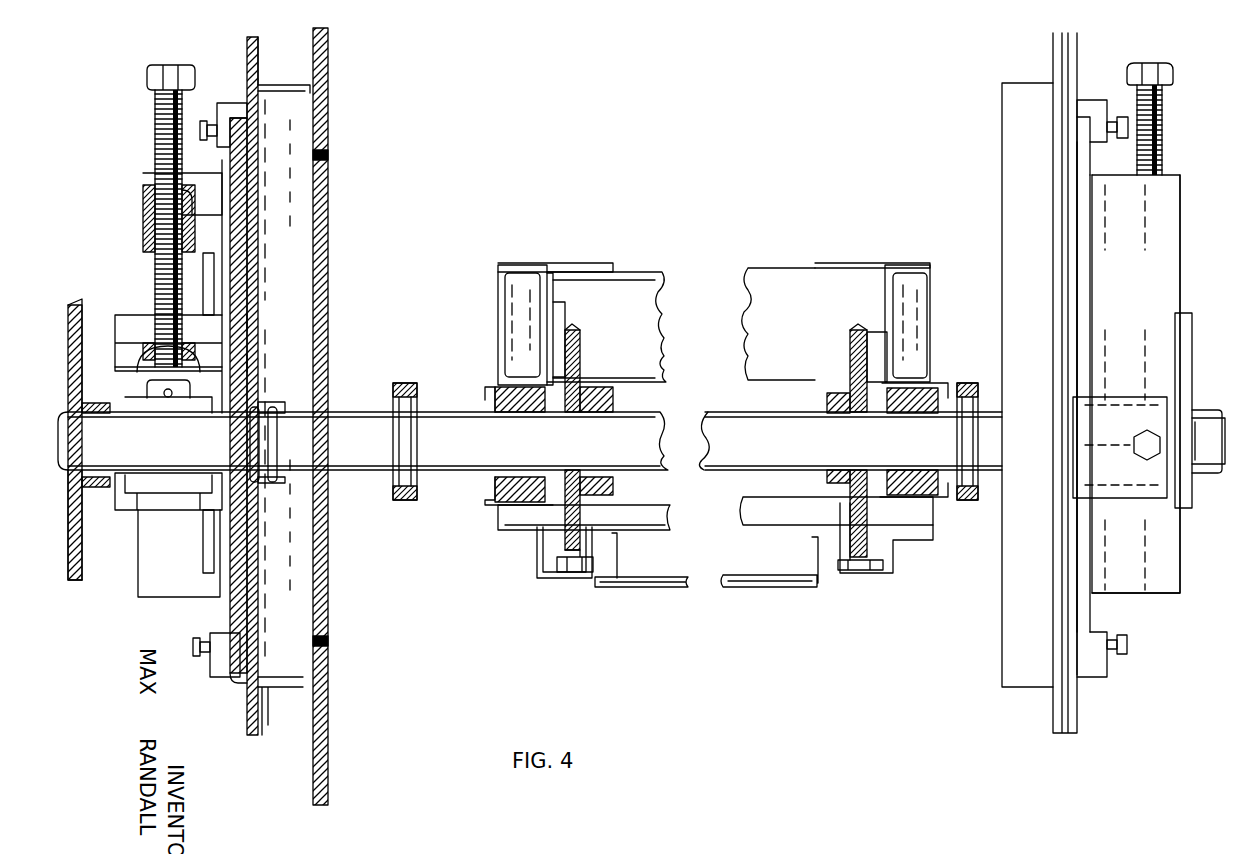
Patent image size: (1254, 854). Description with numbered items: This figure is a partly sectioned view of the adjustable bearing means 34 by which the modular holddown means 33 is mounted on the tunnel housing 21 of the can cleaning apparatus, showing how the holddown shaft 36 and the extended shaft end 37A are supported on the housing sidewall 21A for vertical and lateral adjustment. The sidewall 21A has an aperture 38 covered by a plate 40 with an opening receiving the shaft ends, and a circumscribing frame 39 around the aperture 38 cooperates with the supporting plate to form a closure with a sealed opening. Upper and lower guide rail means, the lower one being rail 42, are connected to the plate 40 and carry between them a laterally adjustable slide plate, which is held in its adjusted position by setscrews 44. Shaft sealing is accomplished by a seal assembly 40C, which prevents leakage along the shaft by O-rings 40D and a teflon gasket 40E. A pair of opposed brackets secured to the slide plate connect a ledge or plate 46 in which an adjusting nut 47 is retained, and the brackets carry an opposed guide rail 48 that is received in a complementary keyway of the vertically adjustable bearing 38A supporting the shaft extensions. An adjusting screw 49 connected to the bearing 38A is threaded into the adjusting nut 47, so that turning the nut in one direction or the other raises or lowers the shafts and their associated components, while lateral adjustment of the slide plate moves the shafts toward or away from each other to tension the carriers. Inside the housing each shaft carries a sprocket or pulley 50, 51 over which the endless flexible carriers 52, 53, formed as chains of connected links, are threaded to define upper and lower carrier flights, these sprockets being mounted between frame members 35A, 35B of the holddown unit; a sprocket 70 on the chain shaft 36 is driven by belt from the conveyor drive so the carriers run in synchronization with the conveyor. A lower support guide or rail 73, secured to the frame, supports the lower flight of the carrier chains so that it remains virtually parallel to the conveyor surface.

The housing 21 is at (313, 37).
The sidewall of tunnel housing 21A is at (330, 104).
The holddown means 33 is at (577, 146).
The adjustable bearing means 34 is at (113, 120).
The channel member 35A is at (547, 310).
The channel member 35B is at (625, 270).
The shaft 36 is at (468, 420).
The extended end of shaft 37A is at (65, 476).
The aperture 38 is at (148, 497).
The vertically adjustable bearing 38A is at (493, 485).
The circumscribing frame 39 is at (302, 161).
The plate 40 is at (185, 268).
The seal assembly 40C is at (243, 371).
The O-rings 40D is at (278, 406).
The teflon gasket 40E is at (247, 315).
The lower guide rail means 42 is at (223, 680).
The setscrews 44 is at (198, 130).
The ledge or plate 46 is at (143, 180).
The adjusting nut 47 is at (143, 238).
The guide rail 48 is at (207, 285).
The adjusting screw 49 is at (155, 105).
The sprocket or pulley 50 is at (597, 273).
The sprocket or pulley 51 is at (860, 328).
The endless flexible carrier 52 is at (585, 346).
The endless flexible carrier 53 is at (840, 342).
The sprocket 70 is at (70, 348).
The lower support guide or rail 73 is at (565, 578).